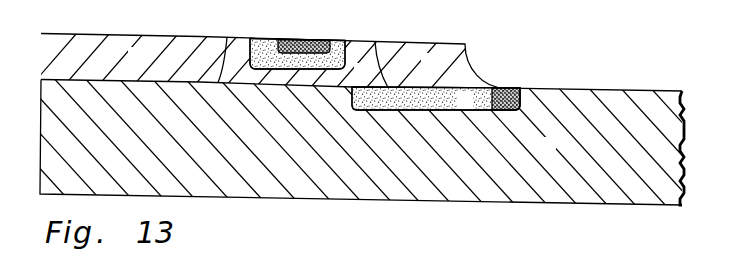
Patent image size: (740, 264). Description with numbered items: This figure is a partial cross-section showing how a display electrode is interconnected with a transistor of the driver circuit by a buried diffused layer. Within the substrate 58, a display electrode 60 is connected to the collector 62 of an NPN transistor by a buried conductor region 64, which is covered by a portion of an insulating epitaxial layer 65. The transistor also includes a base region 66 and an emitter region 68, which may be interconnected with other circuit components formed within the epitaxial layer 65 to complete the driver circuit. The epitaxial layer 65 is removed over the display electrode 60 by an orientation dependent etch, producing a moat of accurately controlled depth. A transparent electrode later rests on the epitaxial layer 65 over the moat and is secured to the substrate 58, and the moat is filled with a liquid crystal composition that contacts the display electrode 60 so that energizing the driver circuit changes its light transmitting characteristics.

The substrate 58 is at (244, 199).
The display electrode 60 is at (506, 88).
The collector 62 is at (366, 43).
The buried conductor region 64 is at (460, 87).
The insulating epitaxial layer 65 is at (171, 42).
The base region 66 is at (339, 36).
The emitter region 68 is at (302, 35).